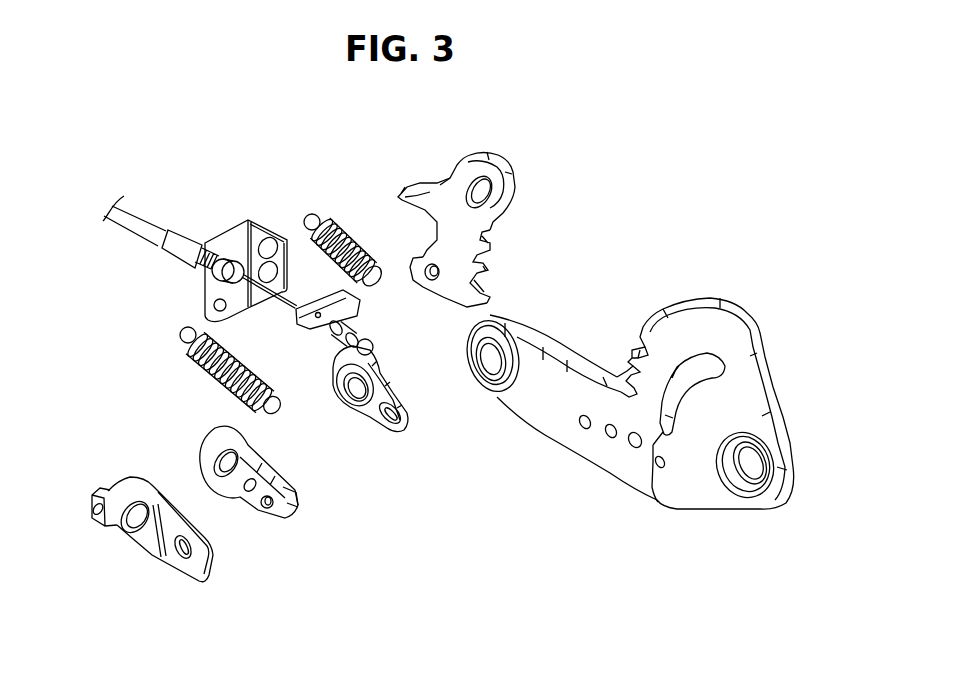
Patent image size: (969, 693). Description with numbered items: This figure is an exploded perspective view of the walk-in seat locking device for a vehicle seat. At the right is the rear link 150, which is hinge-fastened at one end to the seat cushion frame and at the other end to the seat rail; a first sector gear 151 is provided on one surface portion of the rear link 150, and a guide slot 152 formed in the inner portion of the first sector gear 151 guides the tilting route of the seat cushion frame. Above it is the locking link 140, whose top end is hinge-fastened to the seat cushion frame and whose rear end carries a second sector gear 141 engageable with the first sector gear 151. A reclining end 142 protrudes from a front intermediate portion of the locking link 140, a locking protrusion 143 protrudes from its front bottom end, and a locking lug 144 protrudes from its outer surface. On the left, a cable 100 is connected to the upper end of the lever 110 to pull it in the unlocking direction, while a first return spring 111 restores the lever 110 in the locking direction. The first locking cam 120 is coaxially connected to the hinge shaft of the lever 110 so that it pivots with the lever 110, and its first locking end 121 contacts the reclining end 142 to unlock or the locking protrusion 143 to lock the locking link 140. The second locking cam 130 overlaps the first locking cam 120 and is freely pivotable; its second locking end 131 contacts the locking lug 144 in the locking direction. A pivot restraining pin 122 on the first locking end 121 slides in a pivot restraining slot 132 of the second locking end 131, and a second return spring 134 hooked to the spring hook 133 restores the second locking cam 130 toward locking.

The cable 100 is at (267, 290).
The lever 110 is at (387, 434).
The first return spring 111 is at (330, 210).
The first locking cam 120 is at (297, 529).
The first locking end 121 is at (299, 506).
The pivot restraining pin 122 is at (264, 510).
The second locking cam 130 is at (126, 555).
The second locking end 131 is at (193, 576).
The pivot restraining slot 132 is at (180, 555).
The spring hook 133 is at (103, 522).
The second return spring 134 is at (200, 381).
The locking link 140 is at (522, 171).
The second sector gear 141 is at (490, 265).
The reclining end 142 is at (398, 196).
The locking protrusion 143 is at (414, 262).
The locking lug 144 is at (432, 281).
The rear link 150 is at (590, 472).
The first sector gear 151 is at (632, 352).
The guide slot 152 is at (659, 483).